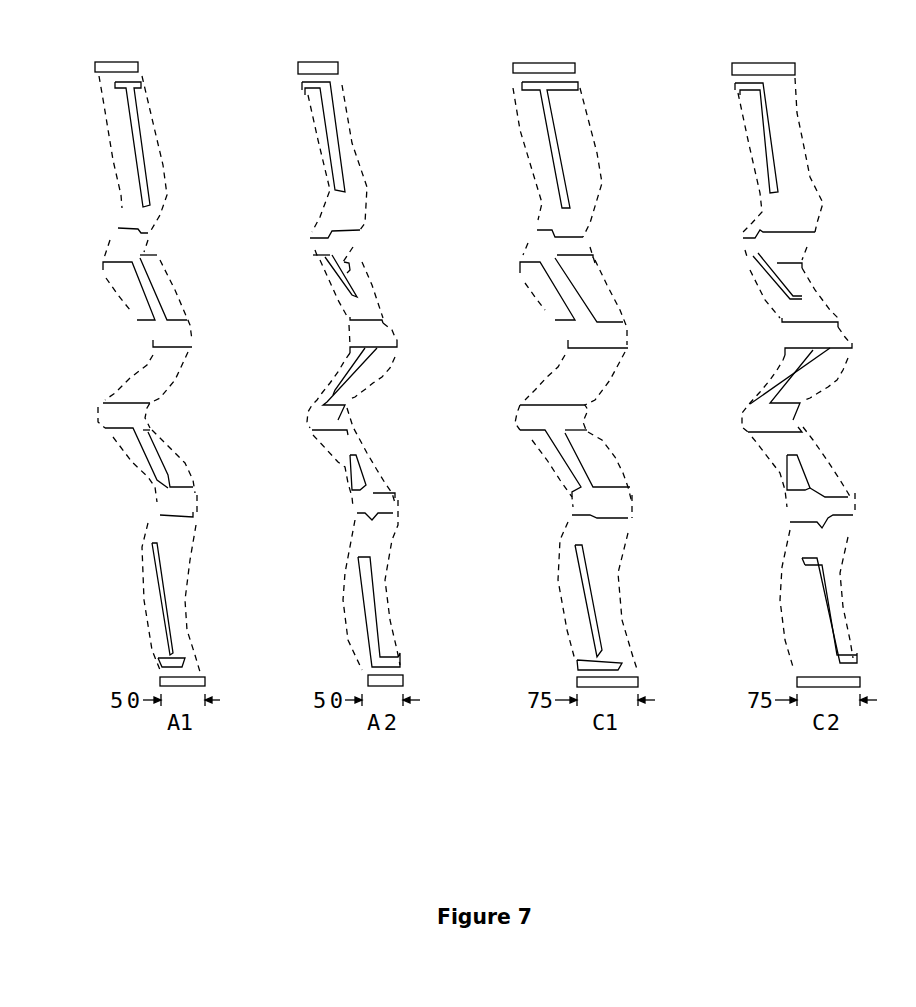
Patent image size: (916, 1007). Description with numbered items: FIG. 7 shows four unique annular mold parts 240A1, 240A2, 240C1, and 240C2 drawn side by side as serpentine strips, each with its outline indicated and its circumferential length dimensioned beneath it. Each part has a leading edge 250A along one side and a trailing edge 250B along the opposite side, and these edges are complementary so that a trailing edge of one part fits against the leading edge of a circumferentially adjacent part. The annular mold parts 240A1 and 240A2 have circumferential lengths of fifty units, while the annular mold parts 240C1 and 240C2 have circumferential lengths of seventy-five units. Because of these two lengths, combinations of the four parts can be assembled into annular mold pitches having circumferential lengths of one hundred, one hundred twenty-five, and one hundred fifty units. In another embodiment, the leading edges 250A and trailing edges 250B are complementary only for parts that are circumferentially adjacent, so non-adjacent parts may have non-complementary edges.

The leading edge 250A is at (404, 359).
The trailing edge 250B is at (517, 351).
The annular mold part 240A1 is at (150, 433).
The annular mold part 240A2 is at (350, 433).
The annular mold part 240C1 is at (575, 442).
The annular mold part 240C2 is at (796, 442).